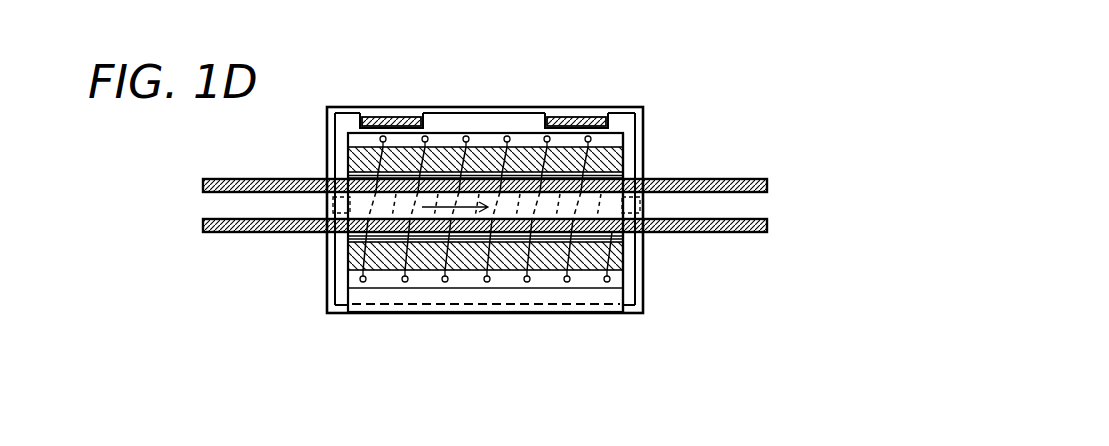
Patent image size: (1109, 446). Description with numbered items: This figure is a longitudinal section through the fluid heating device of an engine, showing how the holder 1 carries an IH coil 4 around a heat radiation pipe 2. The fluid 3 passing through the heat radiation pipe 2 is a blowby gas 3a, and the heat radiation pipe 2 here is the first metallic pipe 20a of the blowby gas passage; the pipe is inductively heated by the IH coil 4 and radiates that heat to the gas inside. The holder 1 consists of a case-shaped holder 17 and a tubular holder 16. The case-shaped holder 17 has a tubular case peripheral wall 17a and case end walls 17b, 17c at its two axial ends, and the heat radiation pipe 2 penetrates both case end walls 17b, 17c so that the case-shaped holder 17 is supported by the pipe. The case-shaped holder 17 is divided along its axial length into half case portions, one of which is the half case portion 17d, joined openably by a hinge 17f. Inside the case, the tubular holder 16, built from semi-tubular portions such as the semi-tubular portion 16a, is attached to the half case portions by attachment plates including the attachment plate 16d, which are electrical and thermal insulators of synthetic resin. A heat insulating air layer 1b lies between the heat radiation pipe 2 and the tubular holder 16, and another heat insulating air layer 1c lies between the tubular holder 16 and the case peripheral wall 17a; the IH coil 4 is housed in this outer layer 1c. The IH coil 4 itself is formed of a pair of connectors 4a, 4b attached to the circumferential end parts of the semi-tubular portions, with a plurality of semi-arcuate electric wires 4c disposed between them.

The holder 1 is at (488, 205).
The heat insulating air layer 1b is at (357, 178).
The heat insulating air layer 1c is at (357, 130).
The heat radiation pipe 2 is at (487, 184).
The first metallic pipe 20a is at (692, 178).
The fluid 3 is at (442, 295).
The blowby gas 3a is at (430, 237).
The IH coil 4 is at (436, 128).
The connector 4a is at (445, 112).
The connector 4b is at (427, 278).
The semi-arcuate electric wire 4c is at (350, 246).
The tubular holder 16 is at (528, 223).
The semi-tubular portion 16a is at (623, 272).
The attachment plate 16d is at (530, 298).
The case-shaped holder 17 is at (471, 185).
The case peripheral wall 17a is at (487, 113).
The case end wall 17b is at (327, 262).
The case end wall 17c is at (643, 267).
The half case portion 17d is at (357, 123).
The hinge 17f is at (395, 117).